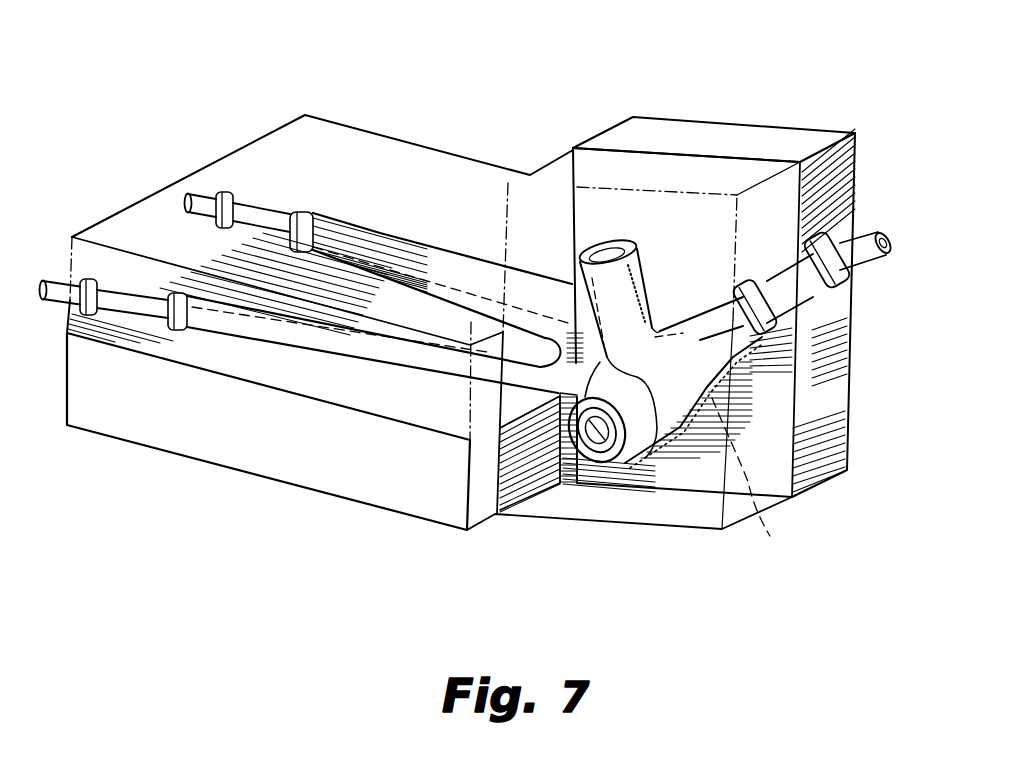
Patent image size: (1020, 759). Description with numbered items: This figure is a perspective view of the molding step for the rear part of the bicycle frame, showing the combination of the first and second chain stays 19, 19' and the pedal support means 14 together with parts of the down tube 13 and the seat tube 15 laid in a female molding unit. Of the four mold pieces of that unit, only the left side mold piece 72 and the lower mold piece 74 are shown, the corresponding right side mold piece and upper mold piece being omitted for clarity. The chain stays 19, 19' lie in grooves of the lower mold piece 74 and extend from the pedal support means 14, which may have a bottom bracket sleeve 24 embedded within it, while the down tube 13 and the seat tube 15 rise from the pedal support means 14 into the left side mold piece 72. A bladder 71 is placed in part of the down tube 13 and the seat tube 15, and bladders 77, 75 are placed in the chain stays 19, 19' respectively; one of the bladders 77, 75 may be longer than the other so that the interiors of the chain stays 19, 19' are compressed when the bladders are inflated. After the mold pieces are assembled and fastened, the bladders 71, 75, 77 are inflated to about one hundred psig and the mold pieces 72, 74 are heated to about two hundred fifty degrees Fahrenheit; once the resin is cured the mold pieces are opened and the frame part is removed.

The down tube 13 is at (770, 367).
The pedal support means 14 is at (643, 438).
The seat tube 15 is at (640, 270).
The first chain stay 19 is at (299, 401).
The second chain stay 19' is at (379, 225).
The bottom bracket sleeve 24 is at (602, 465).
The bladder 71 is at (758, 476).
The left side mold piece 72 is at (678, 135).
The lower mold piece 74 is at (248, 452).
The bladder 75 is at (447, 283).
The bladder 77 is at (385, 349).